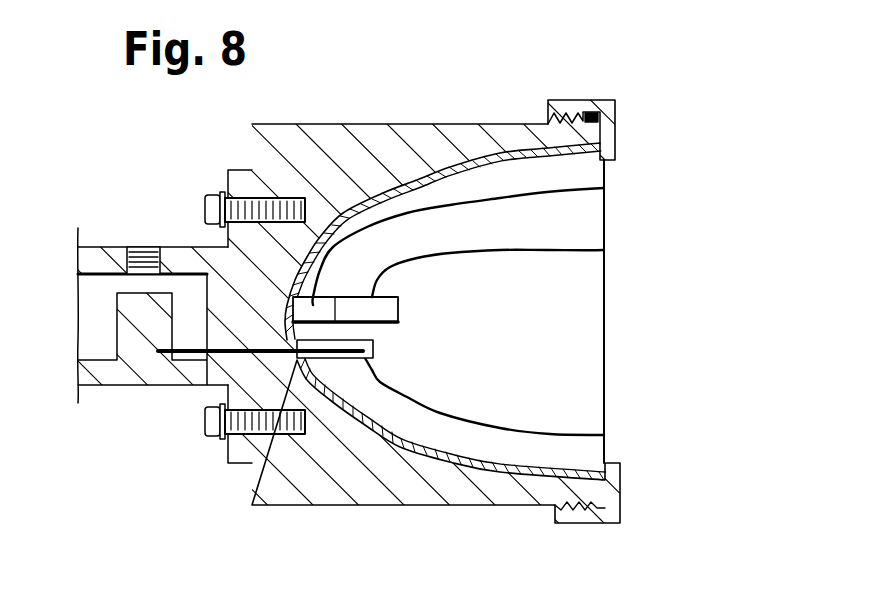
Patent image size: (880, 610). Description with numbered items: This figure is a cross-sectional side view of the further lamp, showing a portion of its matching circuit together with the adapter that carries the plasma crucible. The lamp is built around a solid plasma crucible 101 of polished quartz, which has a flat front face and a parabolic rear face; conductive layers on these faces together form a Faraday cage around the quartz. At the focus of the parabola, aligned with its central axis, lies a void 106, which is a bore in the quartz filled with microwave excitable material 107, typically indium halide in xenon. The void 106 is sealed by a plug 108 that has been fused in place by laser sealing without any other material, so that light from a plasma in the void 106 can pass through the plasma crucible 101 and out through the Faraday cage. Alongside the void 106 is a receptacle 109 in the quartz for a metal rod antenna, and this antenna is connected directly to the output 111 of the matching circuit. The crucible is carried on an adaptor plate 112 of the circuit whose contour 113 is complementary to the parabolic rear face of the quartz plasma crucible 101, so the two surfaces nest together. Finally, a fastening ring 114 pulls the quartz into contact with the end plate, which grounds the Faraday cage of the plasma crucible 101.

The plasma crucible 101 is at (522, 370).
The void 106 is at (604, 250).
The microwave excitable material 107 is at (400, 304).
The plug 108 is at (604, 188).
The receptacle 109 is at (604, 435).
The output 111 is at (217, 353).
The adaptor plate 112 is at (347, 160).
The contour 113 is at (450, 162).
The fastening ring 114 is at (613, 128).